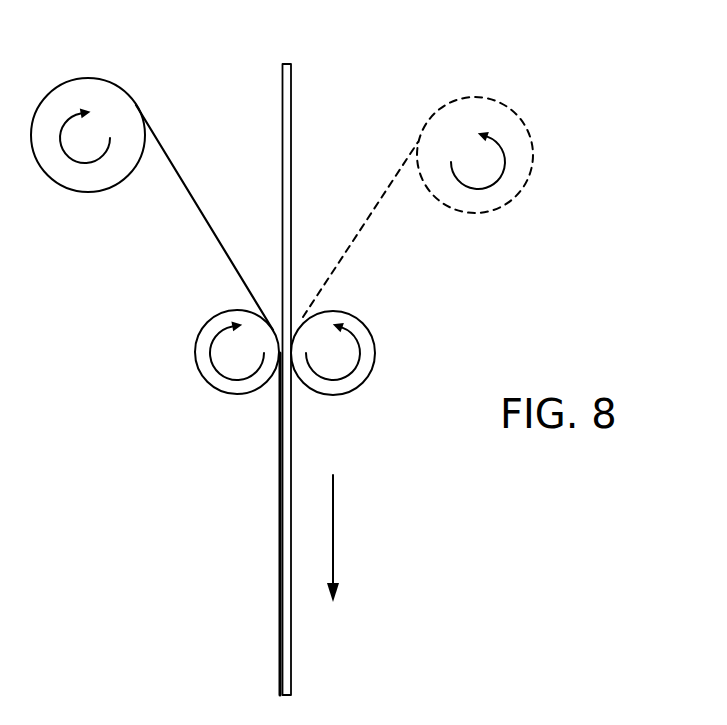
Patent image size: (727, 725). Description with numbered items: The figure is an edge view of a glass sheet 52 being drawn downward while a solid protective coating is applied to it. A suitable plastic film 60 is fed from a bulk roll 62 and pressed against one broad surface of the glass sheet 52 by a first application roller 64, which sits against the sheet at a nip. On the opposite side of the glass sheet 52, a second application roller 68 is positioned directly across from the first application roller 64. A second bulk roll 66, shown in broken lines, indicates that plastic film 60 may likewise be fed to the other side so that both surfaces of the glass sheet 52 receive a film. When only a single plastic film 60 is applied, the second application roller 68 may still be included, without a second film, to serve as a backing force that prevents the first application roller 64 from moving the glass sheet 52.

The glass sheet 52 is at (291, 118).
The plastic film 60 is at (190, 197).
The bulk roll 62 is at (133, 98).
The first application roller 64 is at (217, 395).
The second bulk roll 66 is at (517, 192).
The second application roller 68 is at (375, 353).